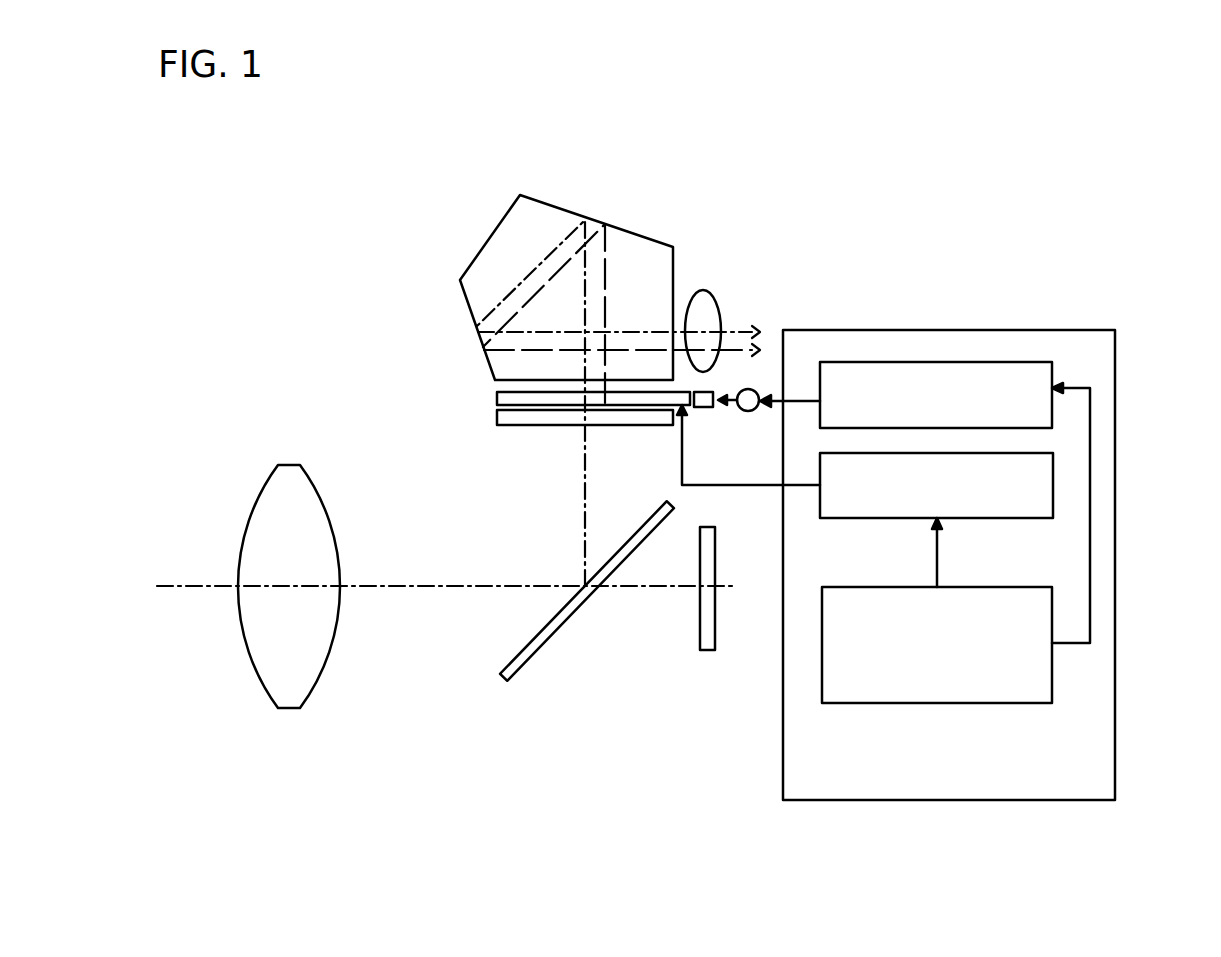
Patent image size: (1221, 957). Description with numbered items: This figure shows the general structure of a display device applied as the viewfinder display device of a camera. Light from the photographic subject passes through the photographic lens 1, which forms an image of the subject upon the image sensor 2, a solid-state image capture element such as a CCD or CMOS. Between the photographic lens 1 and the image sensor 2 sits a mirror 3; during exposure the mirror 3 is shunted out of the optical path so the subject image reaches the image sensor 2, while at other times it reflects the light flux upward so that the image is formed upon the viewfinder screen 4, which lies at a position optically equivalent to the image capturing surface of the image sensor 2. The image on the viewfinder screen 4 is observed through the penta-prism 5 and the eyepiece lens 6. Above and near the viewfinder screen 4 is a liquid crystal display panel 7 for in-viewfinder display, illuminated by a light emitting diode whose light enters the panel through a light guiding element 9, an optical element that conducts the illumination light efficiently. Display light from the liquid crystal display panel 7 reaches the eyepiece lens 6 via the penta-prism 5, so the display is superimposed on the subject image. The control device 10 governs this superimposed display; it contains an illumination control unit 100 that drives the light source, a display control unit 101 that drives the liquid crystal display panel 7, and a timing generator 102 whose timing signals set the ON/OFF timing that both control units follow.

The photographic lens 1 is at (322, 498).
The image sensor 2 is at (707, 650).
The mirror 3 is at (545, 648).
The viewfinder screen 4 is at (540, 425).
The penta-prism 5 is at (637, 232).
The eyepiece lens 6 is at (710, 290).
The liquid crystal display panel 7 is at (497, 399).
The light guiding element 9 is at (707, 407).
The control device 10 is at (853, 802).
The illumination control unit 100 is at (1003, 360).
The display control unit 101 is at (1053, 463).
The timing generator 102 is at (1015, 705).